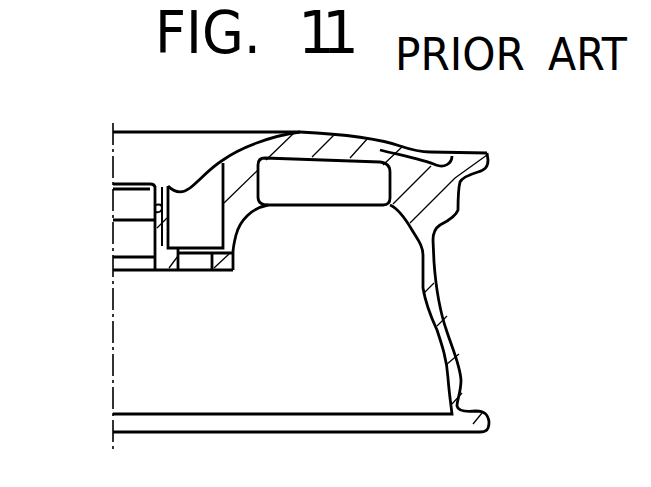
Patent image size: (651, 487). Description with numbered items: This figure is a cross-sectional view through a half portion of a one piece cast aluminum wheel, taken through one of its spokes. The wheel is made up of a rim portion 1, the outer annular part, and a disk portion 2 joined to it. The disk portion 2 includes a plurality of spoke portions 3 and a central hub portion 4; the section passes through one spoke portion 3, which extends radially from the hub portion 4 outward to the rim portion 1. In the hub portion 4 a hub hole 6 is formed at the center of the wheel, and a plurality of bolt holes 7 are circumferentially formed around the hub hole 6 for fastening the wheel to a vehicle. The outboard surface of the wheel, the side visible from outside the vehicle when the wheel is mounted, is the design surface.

The rim portion 1 is at (436, 282).
The disk portion 2 is at (348, 133).
The spoke portion 3 is at (294, 131).
The central hub portion 4 is at (172, 240).
The hub hole 6 is at (160, 243).
The bolt hole 7 is at (183, 258).